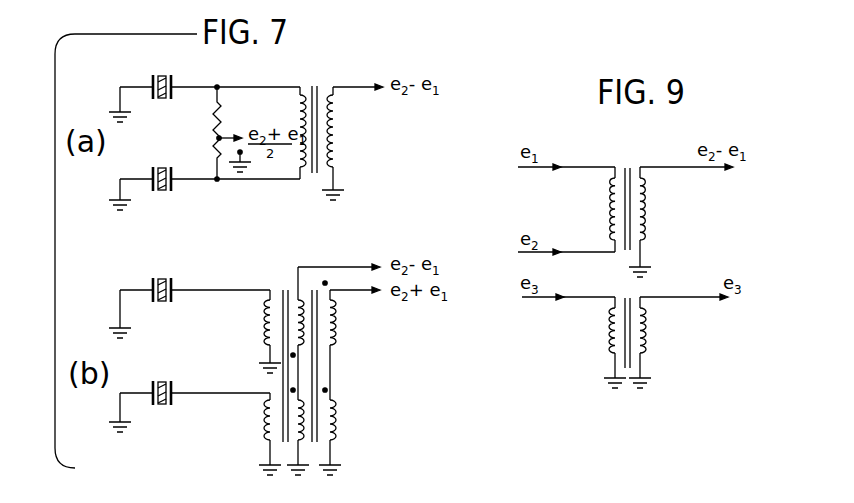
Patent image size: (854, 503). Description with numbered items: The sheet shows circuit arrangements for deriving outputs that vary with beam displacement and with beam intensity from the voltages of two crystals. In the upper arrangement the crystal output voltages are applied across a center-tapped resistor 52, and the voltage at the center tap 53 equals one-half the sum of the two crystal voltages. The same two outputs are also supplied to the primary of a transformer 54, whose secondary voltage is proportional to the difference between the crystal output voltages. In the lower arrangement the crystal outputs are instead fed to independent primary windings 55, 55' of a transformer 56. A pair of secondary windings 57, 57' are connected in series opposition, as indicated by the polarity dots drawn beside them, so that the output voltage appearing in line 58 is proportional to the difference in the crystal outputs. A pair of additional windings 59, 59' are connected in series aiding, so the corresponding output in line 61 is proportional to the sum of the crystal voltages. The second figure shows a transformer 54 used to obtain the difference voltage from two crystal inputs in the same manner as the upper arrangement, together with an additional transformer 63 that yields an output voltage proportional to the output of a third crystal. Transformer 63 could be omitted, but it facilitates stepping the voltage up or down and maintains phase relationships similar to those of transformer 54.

In FIG. 7, the center-tapped resistor 52 is at (213, 126).
In FIG. 7, the center tap 53 is at (226, 136).
In FIG. 7, the transformer 54 is at (327, 74).
In FIG. 9, the transformer 54 is at (639, 160).
In FIG. 7, the primary winding 55 is at (255, 331).
In FIG. 7, the primary winding 55' is at (255, 434).
In FIG. 7, the transformer 56 is at (286, 278).
In FIG. 7, the secondary winding 57 is at (335, 333).
In FIG. 7, the secondary winding 57' is at (335, 431).
In FIG. 7, the line 58 is at (352, 267).
In FIG. 7, the additional winding 59 is at (351, 340).
In FIG. 7, the additional winding 59' is at (351, 431).
In FIG. 7, the line 61 is at (352, 292).
In FIG. 9, the additional transformer 63 is at (636, 295).